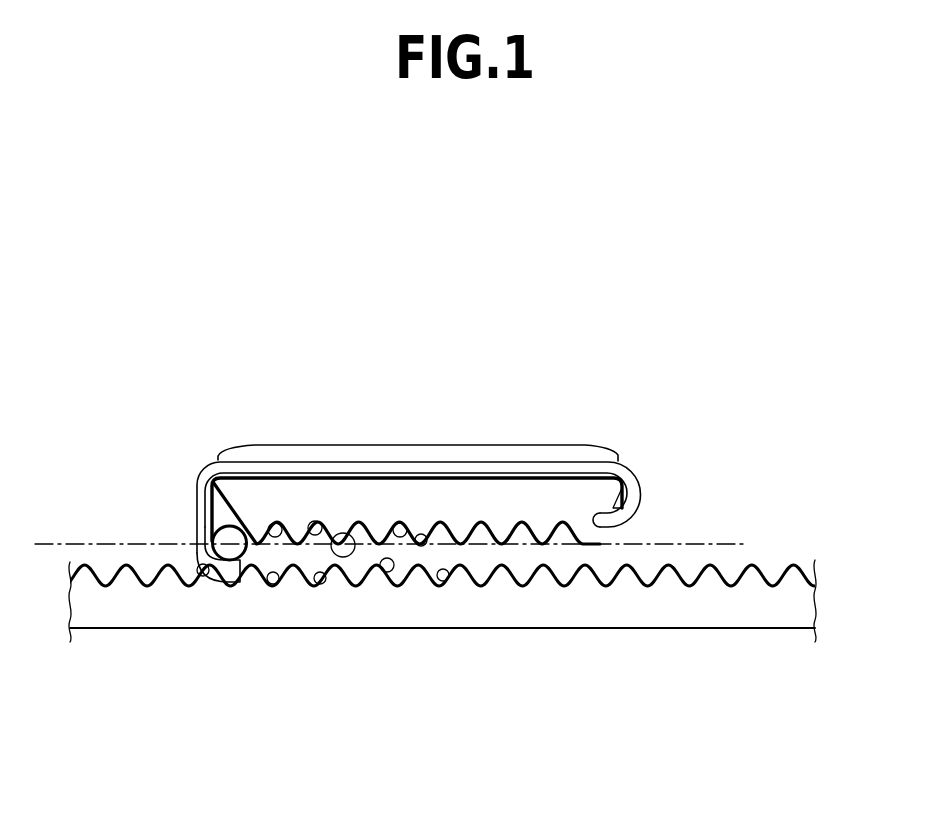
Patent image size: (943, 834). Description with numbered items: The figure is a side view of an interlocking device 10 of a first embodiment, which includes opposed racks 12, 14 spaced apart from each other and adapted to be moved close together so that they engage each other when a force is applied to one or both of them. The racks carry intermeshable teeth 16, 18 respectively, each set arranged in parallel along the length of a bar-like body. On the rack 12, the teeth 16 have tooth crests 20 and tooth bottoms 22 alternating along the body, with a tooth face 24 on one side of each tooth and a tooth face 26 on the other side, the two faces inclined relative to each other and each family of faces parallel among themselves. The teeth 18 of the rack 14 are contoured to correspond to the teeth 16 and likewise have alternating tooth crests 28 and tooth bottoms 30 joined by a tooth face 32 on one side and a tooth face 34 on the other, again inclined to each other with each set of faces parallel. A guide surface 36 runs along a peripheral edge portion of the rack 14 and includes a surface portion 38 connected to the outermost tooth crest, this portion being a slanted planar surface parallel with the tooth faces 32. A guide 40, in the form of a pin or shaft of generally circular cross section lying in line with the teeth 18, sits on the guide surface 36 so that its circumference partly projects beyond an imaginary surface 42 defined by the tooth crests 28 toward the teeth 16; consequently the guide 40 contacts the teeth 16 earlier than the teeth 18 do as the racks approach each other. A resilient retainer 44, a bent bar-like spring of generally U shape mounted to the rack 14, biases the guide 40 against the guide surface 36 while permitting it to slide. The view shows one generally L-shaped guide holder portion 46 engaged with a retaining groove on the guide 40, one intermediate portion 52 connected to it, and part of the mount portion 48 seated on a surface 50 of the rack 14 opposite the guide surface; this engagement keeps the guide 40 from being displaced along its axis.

The interlocking device 10 is at (595, 300).
The rack 12 is at (763, 617).
The rack 14 is at (580, 452).
The teeth 16 is at (763, 558).
The teeth 18 is at (526, 567).
The tooth crests 20 is at (402, 587).
The tooth bottoms 22 is at (452, 573).
The tooth face 24 is at (285, 577).
The tooth face 26 is at (312, 582).
The tooth crests 28 is at (362, 540).
The tooth bottoms 30 is at (415, 540).
The tooth face 32 is at (266, 530).
The tooth face 34 is at (334, 546).
The guide surface 36 is at (197, 490).
The surface portion 38 is at (205, 520).
The guide 40 is at (222, 542).
The imaginary surface 42 is at (727, 542).
The resilient retainer 44 is at (533, 461).
The guide holder portions 46 is at (192, 577).
The mount portion 48 is at (622, 537).
The surface 50 is at (603, 533).
The intermediate portions 52 is at (473, 462).